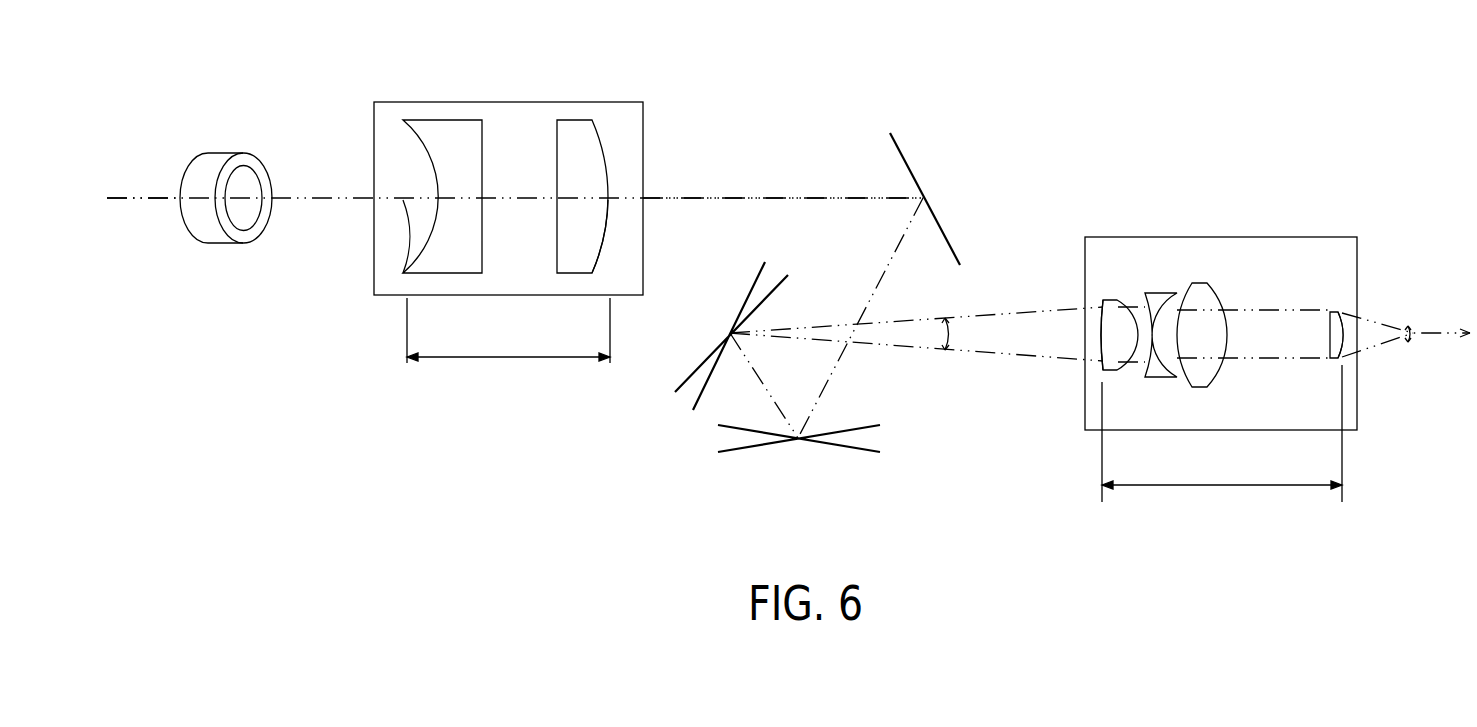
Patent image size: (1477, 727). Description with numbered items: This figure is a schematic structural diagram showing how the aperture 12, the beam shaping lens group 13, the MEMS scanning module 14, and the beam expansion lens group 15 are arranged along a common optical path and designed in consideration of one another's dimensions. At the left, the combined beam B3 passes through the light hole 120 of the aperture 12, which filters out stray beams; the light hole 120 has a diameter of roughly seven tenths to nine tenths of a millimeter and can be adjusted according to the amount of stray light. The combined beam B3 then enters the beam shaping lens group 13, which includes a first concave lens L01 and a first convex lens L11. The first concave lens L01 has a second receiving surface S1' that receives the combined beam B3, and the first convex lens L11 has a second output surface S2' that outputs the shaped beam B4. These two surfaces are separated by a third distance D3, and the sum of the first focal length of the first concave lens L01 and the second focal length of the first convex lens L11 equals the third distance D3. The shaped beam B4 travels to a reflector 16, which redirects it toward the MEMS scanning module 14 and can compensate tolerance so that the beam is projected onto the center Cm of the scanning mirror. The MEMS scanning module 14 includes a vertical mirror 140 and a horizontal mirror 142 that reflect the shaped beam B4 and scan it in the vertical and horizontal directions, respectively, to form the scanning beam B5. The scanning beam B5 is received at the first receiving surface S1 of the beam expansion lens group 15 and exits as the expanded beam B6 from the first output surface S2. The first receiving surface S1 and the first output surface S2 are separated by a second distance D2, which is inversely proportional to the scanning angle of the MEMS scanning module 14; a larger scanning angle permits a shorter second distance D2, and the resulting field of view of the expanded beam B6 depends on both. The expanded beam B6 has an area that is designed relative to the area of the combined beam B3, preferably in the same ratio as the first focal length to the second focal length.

The aperture 12 is at (185, 224).
The light hole 120 is at (229, 166).
The combined beam B3 is at (113, 195).
The beam shaping lens group 13 is at (508, 102).
The first concave lens L01 is at (441, 120).
The first convex lens L11 is at (571, 120).
The second receiving surface S1' is at (374, 267).
The second output surface S2' is at (632, 267).
The third distance D3 is at (508, 330).
The shaped beam B4 is at (782, 198).
The reflector 16 is at (916, 182).
The MEMS scanning module 14 is at (743, 393).
The vertical mirror 140 is at (676, 386).
The horizontal mirror 142 is at (745, 450).
The center Cm is at (798, 440).
The scanning beam B5 is at (1015, 362).
The beam expansion lens group 15 is at (1219, 237).
The first receiving surface S1 is at (1070, 372).
The first output surface S2 is at (1370, 384).
The second distance D2 is at (1222, 442).
The expanded beam B6 is at (1408, 325).